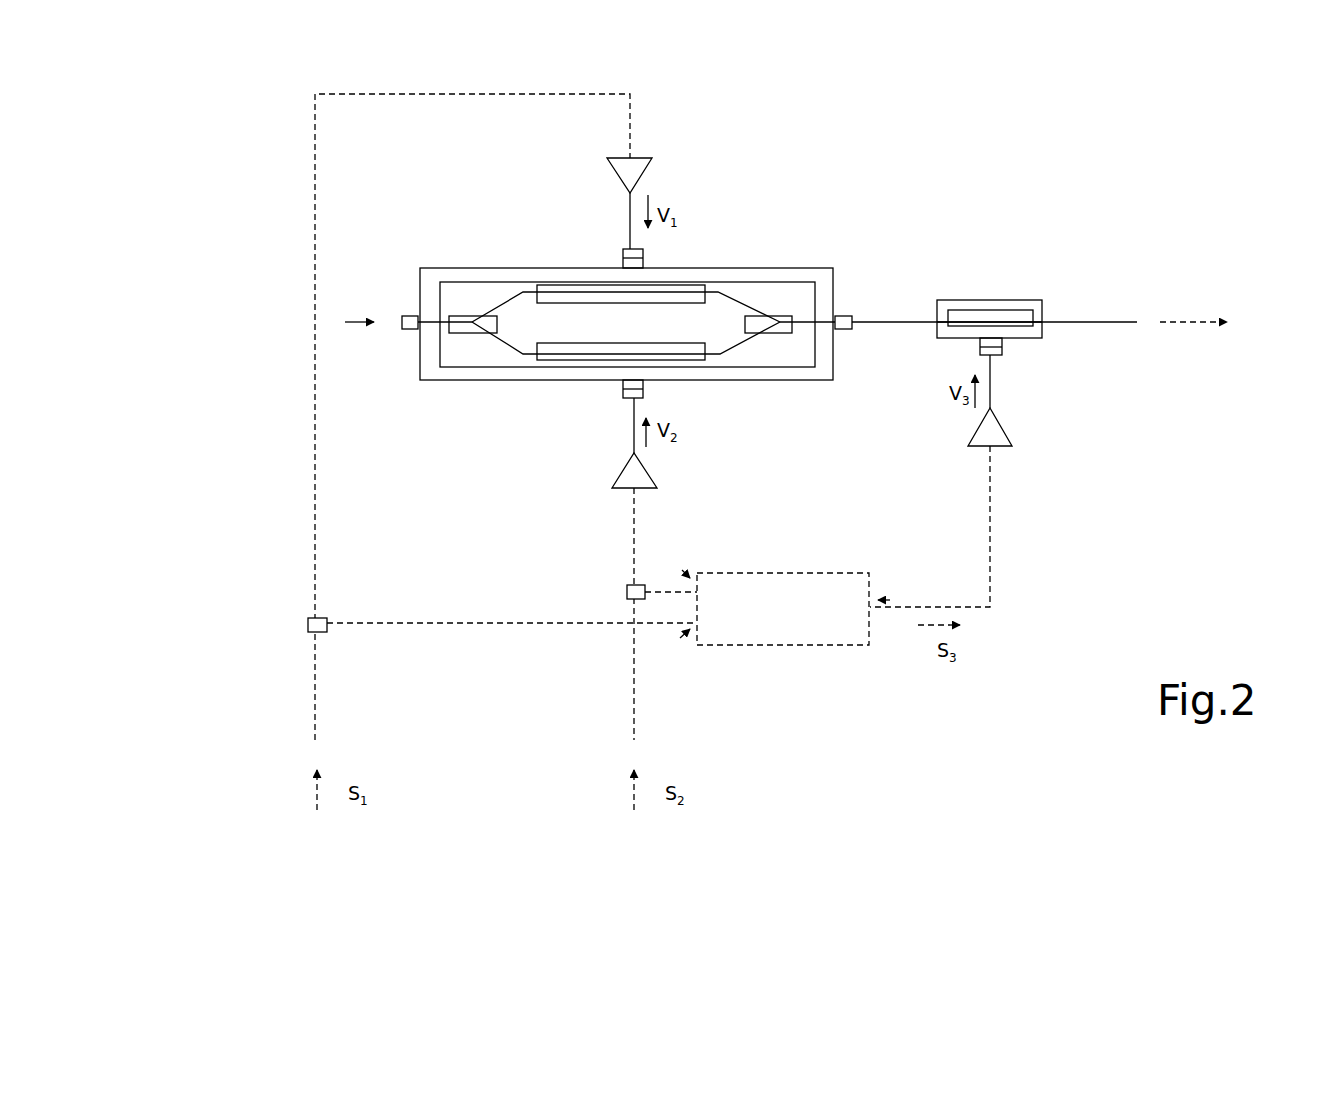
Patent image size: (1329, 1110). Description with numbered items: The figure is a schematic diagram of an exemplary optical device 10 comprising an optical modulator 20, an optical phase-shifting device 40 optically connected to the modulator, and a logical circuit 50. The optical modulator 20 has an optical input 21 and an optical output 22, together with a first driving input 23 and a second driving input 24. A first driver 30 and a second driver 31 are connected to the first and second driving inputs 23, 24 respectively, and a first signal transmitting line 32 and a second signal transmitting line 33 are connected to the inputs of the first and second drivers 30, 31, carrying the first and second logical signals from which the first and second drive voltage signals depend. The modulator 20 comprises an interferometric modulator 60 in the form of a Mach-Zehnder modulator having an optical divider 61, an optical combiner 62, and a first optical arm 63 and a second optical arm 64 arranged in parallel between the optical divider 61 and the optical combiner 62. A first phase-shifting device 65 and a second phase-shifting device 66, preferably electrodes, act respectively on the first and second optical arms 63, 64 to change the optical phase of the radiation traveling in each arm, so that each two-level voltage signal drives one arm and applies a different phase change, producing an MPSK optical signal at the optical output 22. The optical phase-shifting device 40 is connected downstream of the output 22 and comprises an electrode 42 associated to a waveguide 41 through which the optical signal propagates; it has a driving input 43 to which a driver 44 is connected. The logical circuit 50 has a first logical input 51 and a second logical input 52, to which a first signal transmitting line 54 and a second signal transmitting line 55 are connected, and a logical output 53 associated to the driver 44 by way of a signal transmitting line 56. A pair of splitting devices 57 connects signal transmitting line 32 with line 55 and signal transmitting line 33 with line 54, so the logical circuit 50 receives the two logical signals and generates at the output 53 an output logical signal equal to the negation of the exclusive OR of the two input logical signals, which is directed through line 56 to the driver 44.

The optical device 10 is at (905, 188).
The optical modulator 20 is at (753, 270).
The optical input 21 is at (417, 318).
The optical output 22 is at (845, 330).
The first driving input 23 is at (645, 257).
The second driving input 24 is at (645, 392).
The first driver 30 is at (630, 173).
The second driver 31 is at (635, 477).
The first signal transmitting line 32 is at (387, 94).
The second signal transmitting line 33 is at (635, 653).
The optical phase-shifting device 40 is at (1015, 252).
The waveguide 41 is at (973, 318).
The electrode 42 is at (1020, 310).
The driving input 43 is at (1002, 347).
The driver 44 is at (993, 430).
The logical circuit 50 is at (777, 618).
The first logical input 51 is at (684, 572).
The second logical input 52 is at (682, 636).
The logical output 53 is at (888, 600).
The first signal transmitting line 54 is at (660, 590).
The second signal transmitting line 55 is at (502, 625).
The signal transmitting line 56 is at (993, 567).
The splitting devices 57 is at (307, 624).
The interferometric modulator 60 is at (628, 346).
The optical divider 61 is at (472, 333).
The optical combiner 62 is at (783, 326).
The first optical arm 63 is at (613, 292).
The second optical arm 64 is at (592, 352).
The first phase-shifting device 65 is at (553, 283).
The second phase-shifting device 66 is at (557, 367).